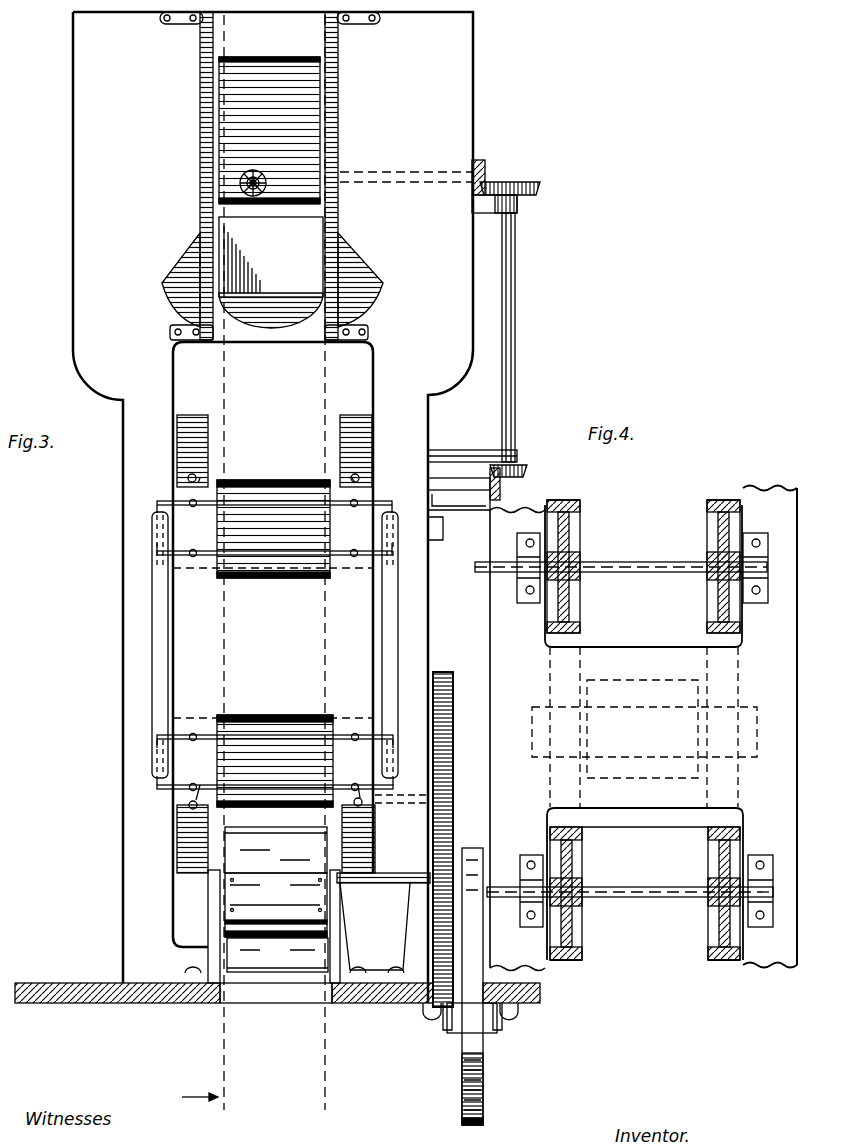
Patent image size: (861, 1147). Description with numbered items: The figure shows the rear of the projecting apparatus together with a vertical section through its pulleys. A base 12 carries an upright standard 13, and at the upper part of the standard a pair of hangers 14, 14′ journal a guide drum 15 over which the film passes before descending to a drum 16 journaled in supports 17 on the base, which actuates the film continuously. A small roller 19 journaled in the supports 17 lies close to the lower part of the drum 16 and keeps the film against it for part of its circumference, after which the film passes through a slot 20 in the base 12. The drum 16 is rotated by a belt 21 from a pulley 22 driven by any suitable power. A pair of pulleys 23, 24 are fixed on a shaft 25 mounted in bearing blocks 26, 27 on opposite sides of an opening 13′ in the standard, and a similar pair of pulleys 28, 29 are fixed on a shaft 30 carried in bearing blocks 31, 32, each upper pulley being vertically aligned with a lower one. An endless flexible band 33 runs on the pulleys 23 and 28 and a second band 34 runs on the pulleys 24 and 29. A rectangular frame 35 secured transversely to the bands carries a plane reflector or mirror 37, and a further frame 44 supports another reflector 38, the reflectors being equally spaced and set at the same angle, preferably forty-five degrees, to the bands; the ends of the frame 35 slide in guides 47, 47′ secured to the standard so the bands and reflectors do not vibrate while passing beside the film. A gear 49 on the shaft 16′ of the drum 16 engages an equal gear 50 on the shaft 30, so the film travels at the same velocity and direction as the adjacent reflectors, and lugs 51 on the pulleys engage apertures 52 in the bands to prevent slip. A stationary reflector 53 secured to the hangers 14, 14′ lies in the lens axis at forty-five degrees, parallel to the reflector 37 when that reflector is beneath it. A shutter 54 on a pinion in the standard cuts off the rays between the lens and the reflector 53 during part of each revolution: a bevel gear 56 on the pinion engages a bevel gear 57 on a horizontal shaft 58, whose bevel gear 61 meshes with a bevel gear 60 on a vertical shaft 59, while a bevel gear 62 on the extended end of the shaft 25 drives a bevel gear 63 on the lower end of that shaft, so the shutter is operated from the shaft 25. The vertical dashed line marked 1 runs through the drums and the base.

In FIG. 3, the section line 1 is at (253, 568).
In FIG. 3, the base 12 is at (160, 1000).
In FIG. 3, the standard 13 is at (273, 507).
In FIG. 3, the opening 13′ is at (273, 644).
In FIG. 4, the opening 13′ is at (642, 638).
In FIG. 3, the hanger 14 is at (207, 145).
In FIG. 3, the hanger 14′ is at (330, 157).
In FIG. 3, the guide drum 15 is at (269, 130).
In FIG. 3, the drum 16 is at (276, 905).
In FIG. 3, the shaft 16′ is at (392, 875).
In FIG. 3, the support 17 is at (213, 922).
In FIG. 3, the small roller 19 is at (277, 955).
In FIG. 3, the slot 20 is at (312, 998).
In FIG. 3, the belt 21 is at (472, 1056).
In FIG. 3, the pulley 22 is at (462, 1097).
In FIG. 3, the pulley 23 is at (210, 457).
In FIG. 4, the pulley 23 is at (576, 542).
In FIG. 3, the pulley 24 is at (340, 434).
In FIG. 4, the pulley 24 is at (712, 532).
In FIG. 3, the shaft 25 is at (448, 462).
In FIG. 4, the shaft 25 is at (667, 574).
In FIG. 4, the bearing block 26 is at (530, 598).
In FIG. 4, the bearing block 27 is at (758, 600).
In FIG. 4, the pulley 28 is at (580, 862).
In FIG. 4, the pulley 29 is at (712, 846).
In FIG. 3, the shaft 30 is at (335, 826).
In FIG. 4, the shaft 30 is at (663, 898).
In FIG. 4, the bearing block 31 is at (530, 855).
In FIG. 4, the bearing block 32 is at (760, 856).
In FIG. 3, the flexible band 33 is at (198, 700).
In FIG. 4, the flexible band 33 is at (568, 965).
In FIG. 3, the flexible band 34 is at (355, 665).
In FIG. 4, the flexible band 34 is at (725, 965).
In FIG. 3, the rectangular frame 35 is at (190, 735).
In FIG. 3, the plane reflector 37 is at (275, 761).
In FIG. 3, the reflector 38 is at (273, 529).
In FIG. 3, the rectangular frame 44 is at (378, 505).
In FIG. 3, the guide 47 is at (160, 618).
In FIG. 3, the guide 47′ is at (390, 630).
In FIG. 3, the gear 49 is at (452, 815).
In FIG. 3, the gear 50 is at (453, 722).
In FIG. 3, the lug 51 is at (198, 478).
In FIG. 4, the lug 51 is at (566, 500).
In FIG. 3, the aperture 52 is at (188, 479).
In FIG. 3, the stationary reflector 53 is at (271, 272).
In FIG. 3, the shutter 54 is at (368, 265).
In FIG. 3, the bevel gear 56 is at (252, 170).
In FIG. 3, the bevel gear 57 is at (260, 175).
In FIG. 3, the horizontal shaft 58 is at (415, 173).
In FIG. 3, the vertical shaft 59 is at (514, 318).
In FIG. 3, the bevel gear 60 is at (530, 190).
In FIG. 3, the bevel gear 61 is at (485, 170).
In FIG. 3, the bevel gear 62 is at (502, 492).
In FIG. 3, the bevel gear 63 is at (522, 470).